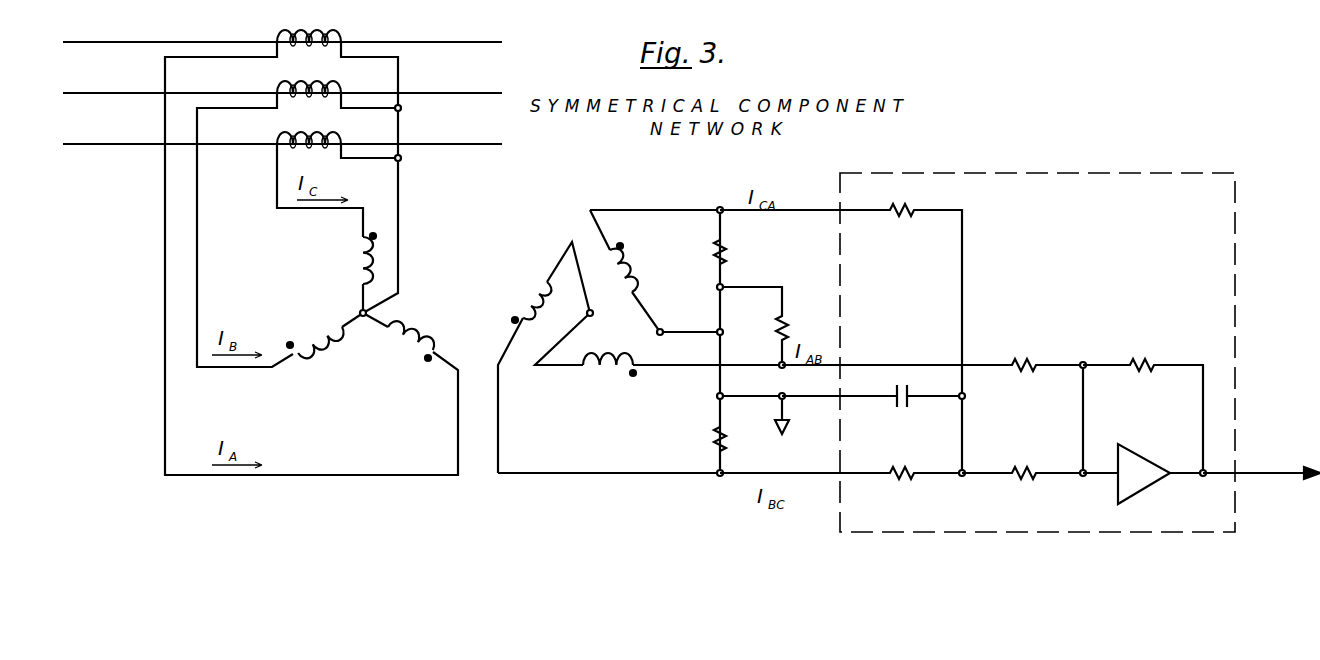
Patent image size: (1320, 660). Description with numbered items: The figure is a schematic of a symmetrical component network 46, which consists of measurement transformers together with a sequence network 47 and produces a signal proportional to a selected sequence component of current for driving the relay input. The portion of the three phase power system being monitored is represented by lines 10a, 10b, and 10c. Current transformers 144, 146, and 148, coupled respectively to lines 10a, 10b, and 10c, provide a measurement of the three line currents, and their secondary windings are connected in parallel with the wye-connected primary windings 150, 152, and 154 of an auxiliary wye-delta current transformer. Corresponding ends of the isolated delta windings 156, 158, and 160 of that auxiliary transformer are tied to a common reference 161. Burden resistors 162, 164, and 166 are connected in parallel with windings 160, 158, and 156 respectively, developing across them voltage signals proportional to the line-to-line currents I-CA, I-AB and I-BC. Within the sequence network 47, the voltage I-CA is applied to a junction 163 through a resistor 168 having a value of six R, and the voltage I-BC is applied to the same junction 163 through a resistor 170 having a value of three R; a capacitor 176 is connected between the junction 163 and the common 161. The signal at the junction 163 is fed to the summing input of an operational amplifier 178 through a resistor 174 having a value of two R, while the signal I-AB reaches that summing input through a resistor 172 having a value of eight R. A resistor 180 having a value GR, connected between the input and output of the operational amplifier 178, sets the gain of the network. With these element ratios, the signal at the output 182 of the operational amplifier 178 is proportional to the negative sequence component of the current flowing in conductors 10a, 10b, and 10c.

The line 10a is at (124, 40).
The line 10b is at (124, 92).
The line 10c is at (124, 143).
The current transformer 144 is at (343, 27).
The current transformer 146 is at (343, 78).
The current transformer 148 is at (343, 133).
The primary winding 150 is at (420, 330).
The primary winding 152 is at (328, 350).
The primary winding 154 is at (355, 258).
The delta winding 156 is at (525, 299).
The delta winding 158 is at (601, 373).
The delta winding 160 is at (632, 264).
The common reference 161 is at (786, 432).
The burden resistor 162 is at (728, 245).
The junction 163 is at (964, 476).
The burden resistor 164 is at (787, 319).
The burden resistor 166 is at (712, 443).
The resistor 168 is at (910, 216).
The resistor 170 is at (896, 479).
The resistor 172 is at (1029, 372).
The resistor 174 is at (1037, 478).
The capacitor 176 is at (895, 389).
The operational amplifier 178 is at (1150, 490).
The resistor 180 is at (1150, 372).
The output 182 is at (1276, 470).
The symmetrical component network 46 is at (616, 170).
The sequence network 47 is at (1235, 219).